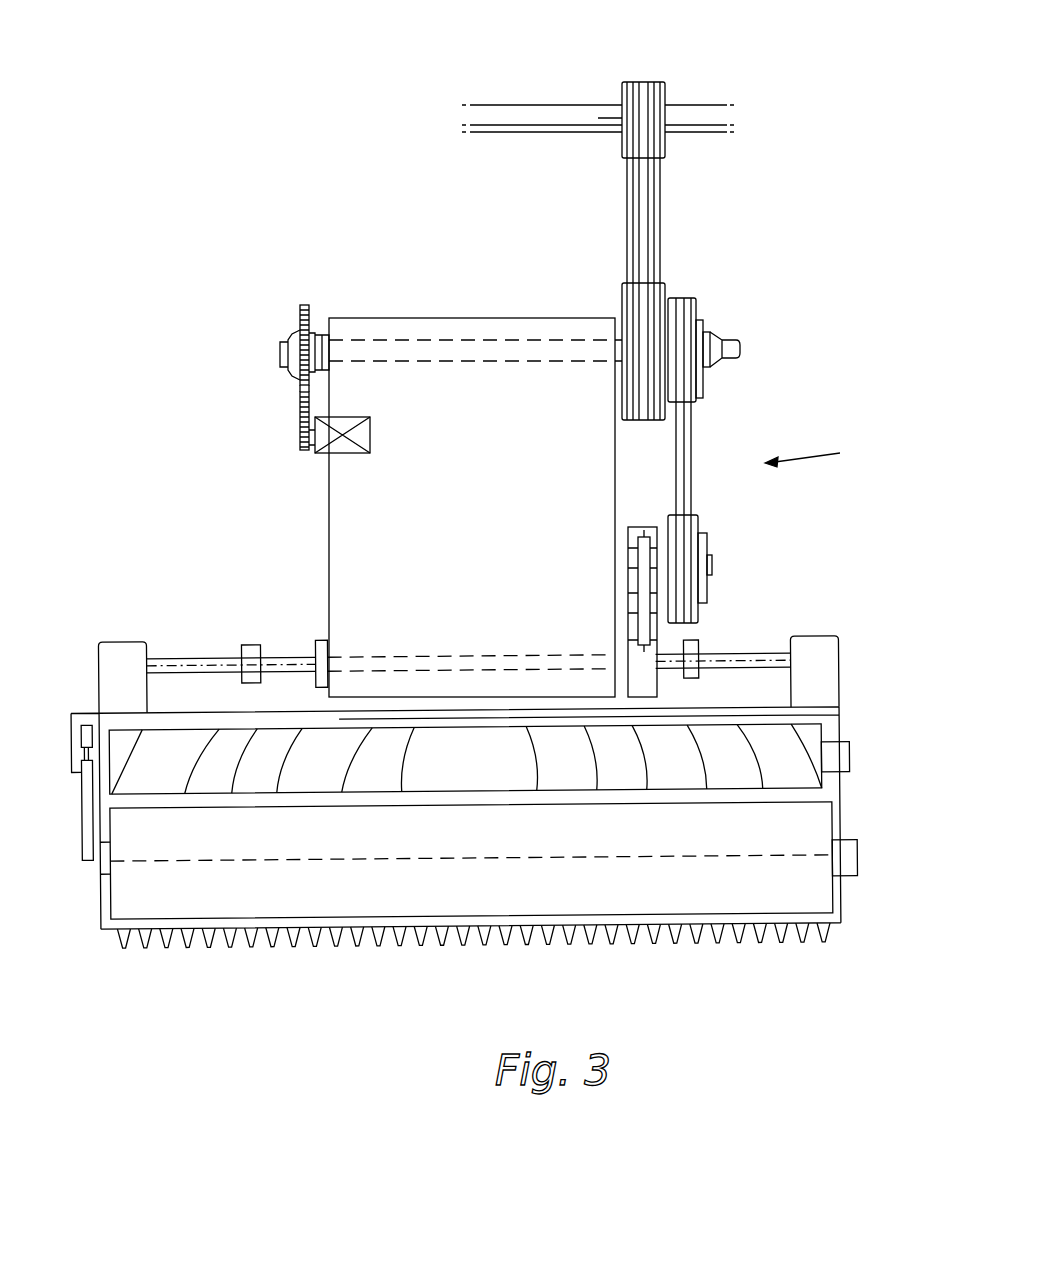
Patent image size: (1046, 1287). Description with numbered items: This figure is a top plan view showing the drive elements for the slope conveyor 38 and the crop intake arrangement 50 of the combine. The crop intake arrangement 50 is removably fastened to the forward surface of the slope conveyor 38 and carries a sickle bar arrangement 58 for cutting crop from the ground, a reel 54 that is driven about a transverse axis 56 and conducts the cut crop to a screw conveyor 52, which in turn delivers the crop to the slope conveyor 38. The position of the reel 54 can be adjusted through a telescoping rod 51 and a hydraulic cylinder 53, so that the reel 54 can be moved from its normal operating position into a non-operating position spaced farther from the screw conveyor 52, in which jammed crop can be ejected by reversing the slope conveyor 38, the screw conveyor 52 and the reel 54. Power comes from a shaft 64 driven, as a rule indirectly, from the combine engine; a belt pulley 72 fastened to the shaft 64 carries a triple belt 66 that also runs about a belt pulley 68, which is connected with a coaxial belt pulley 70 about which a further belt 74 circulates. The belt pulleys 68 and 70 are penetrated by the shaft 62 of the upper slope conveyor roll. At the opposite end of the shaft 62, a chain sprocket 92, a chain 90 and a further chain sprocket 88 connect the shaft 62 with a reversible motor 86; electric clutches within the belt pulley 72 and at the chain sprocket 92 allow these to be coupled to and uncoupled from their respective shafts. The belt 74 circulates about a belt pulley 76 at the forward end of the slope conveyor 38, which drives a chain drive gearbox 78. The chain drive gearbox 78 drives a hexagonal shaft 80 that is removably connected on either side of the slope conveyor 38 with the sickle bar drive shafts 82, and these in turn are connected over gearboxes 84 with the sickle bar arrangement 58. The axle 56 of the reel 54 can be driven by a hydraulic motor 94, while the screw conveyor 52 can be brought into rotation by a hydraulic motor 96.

The slope conveyor 38 is at (820, 455).
The crop intake arrangement 50 is at (848, 797).
The telescoping rod 51 is at (75, 850).
The screw conveyor 52 is at (822, 730).
The hydraulic cylinder 53 is at (84, 726).
The reel 54 is at (842, 822).
The transverse axis 56 is at (812, 860).
The sickle bar arrangement 58 is at (736, 948).
The shaft 62 is at (426, 340).
The shaft 64 is at (712, 105).
The triple belt 66 is at (662, 192).
The belt pulley 68 is at (663, 283).
The belt pulley 70 is at (695, 300).
The belt pulley 72 is at (665, 85).
The belt 74 is at (692, 446).
The belt pulley 76 is at (698, 520).
The chain drive gearbox 78 is at (640, 560).
The hexagonal shaft 80 is at (292, 656).
The sickle bar drive shafts 82 is at (197, 656).
The gearboxes 84 is at (125, 645).
The reversible motor 86 is at (357, 456).
The chain sprocket 88 is at (300, 447).
The chain 90 is at (301, 401).
The chain sprocket 92 is at (305, 306).
The hydraulic motor 94 is at (857, 861).
The hydraulic motor 96 is at (851, 757).